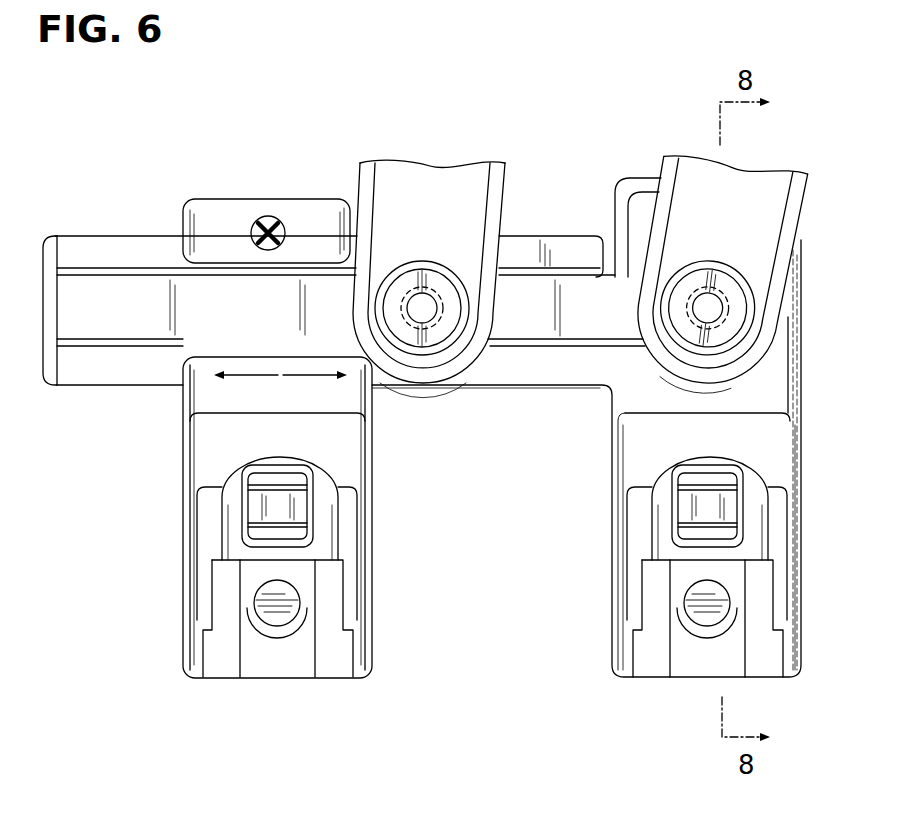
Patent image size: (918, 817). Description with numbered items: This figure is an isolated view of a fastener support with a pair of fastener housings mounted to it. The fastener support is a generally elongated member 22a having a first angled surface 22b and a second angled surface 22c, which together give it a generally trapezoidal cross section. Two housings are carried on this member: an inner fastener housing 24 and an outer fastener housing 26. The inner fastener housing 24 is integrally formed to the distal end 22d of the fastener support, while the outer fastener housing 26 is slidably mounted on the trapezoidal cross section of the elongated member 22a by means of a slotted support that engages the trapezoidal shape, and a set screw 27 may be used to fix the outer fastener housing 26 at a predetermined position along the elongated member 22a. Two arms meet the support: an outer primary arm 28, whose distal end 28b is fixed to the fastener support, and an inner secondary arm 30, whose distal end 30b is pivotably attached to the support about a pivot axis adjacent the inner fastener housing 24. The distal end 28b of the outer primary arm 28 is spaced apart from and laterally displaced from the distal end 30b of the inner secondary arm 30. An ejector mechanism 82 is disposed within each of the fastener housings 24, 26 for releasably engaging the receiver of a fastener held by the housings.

The elongated member 22a is at (97, 300).
The first angled surface 22b is at (135, 246).
The second angled surface 22c is at (113, 372).
The distal end 22d is at (795, 318).
The inner fastener housing 24 is at (813, 378).
The outer fastener housing 26 is at (254, 402).
The set screw 27 is at (270, 216).
The outer primary arm 28 is at (473, 208).
The distal end of outer primary arm 28b is at (423, 373).
The inner secondary arm 30 is at (773, 208).
The distal end of inner secondary arm 30b is at (692, 370).
The ejector mechanism 82 is at (153, 573).